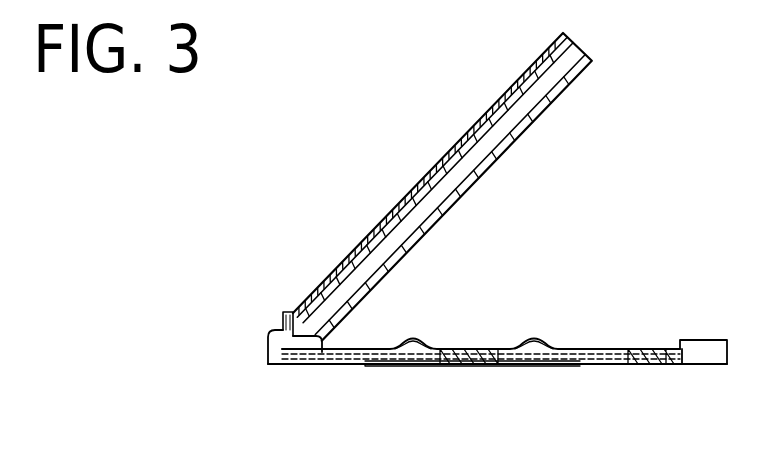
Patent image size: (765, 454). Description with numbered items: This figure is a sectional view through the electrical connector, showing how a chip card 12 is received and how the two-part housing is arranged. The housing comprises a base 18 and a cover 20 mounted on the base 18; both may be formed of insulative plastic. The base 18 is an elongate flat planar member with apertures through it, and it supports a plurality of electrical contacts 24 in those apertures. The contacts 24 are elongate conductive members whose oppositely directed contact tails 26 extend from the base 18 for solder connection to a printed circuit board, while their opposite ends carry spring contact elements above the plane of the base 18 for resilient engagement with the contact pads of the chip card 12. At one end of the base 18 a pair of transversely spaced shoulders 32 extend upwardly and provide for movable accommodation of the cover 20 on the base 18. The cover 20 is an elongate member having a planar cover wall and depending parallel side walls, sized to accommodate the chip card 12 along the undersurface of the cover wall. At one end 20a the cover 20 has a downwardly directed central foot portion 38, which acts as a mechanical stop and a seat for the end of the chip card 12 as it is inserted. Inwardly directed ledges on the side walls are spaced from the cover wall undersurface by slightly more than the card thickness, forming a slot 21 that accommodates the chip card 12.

The chip card 12 is at (533, 90).
The cover 20 is at (470, 131).
The slot 21 is at (508, 123).
The end of cover 20a is at (290, 330).
The central foot portion 38 is at (283, 330).
The shoulders 32 is at (275, 338).
The electrical contacts 24 is at (595, 348).
The base 18 is at (480, 365).
The contact tails 26 is at (272, 367).